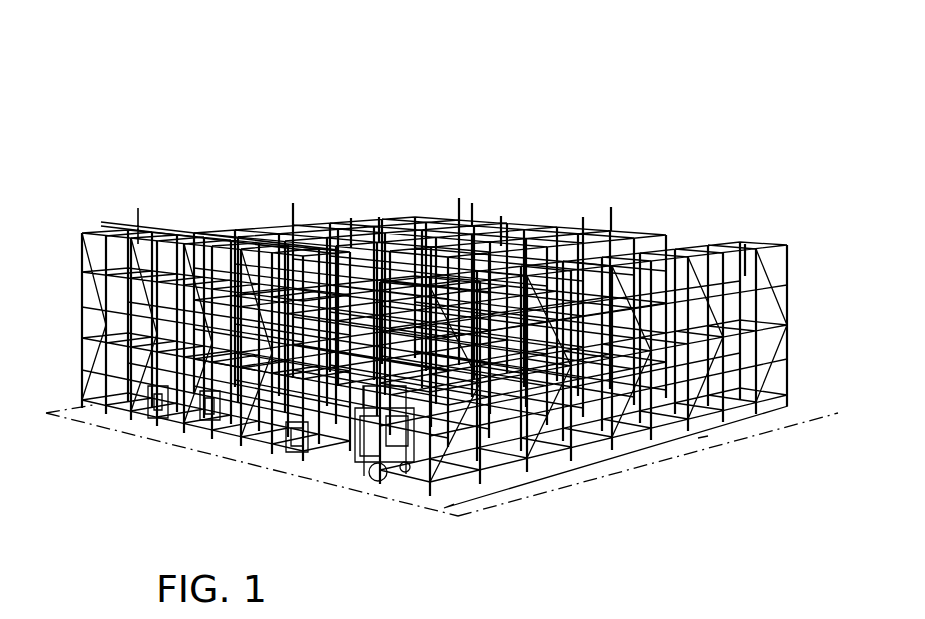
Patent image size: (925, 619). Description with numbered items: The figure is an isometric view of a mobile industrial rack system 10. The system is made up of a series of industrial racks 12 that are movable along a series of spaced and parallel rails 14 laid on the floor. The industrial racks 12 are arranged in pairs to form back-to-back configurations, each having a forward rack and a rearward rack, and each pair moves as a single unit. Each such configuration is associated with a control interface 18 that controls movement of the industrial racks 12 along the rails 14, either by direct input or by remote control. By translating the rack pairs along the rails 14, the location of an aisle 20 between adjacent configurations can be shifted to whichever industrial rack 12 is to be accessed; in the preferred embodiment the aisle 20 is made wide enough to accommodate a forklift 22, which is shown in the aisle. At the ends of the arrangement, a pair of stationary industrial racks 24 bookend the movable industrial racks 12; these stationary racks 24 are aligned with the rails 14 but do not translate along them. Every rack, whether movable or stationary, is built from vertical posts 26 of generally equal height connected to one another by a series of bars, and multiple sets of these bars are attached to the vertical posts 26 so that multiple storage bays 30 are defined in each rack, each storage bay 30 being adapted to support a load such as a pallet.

The mobile industrial rack system 10 is at (640, 104).
The industrial rack 12 is at (634, 231).
The rail 14 is at (452, 470).
The control interface 18 is at (198, 408).
The aisle 20 is at (308, 462).
The forklift 22 is at (398, 466).
The stationary industrial rack 24 is at (66, 308).
The vertical post 26 is at (343, 216).
The storage bay 30 is at (288, 446).